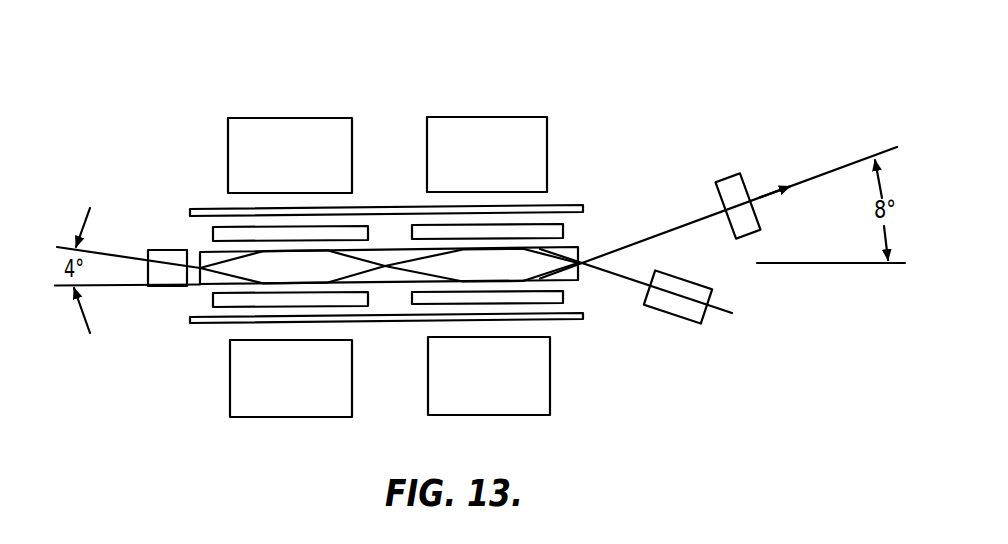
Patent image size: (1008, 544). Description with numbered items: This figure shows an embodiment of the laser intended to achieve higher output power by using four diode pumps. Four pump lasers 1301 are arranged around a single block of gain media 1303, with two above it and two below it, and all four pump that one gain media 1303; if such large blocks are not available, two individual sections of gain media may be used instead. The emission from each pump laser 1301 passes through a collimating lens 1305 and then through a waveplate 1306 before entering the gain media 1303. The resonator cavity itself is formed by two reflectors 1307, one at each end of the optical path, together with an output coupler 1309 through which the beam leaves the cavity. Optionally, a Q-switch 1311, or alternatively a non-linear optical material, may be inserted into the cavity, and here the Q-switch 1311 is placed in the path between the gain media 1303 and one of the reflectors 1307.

The pump laser 1301 is at (312, 118).
The gain media 1303 is at (562, 273).
The collimating lens 1305 is at (557, 203).
The waveplate 1306 is at (413, 293).
The reflector 1307 is at (168, 250).
The output coupler 1309 is at (730, 177).
The Q-switch 1311 is at (663, 312).